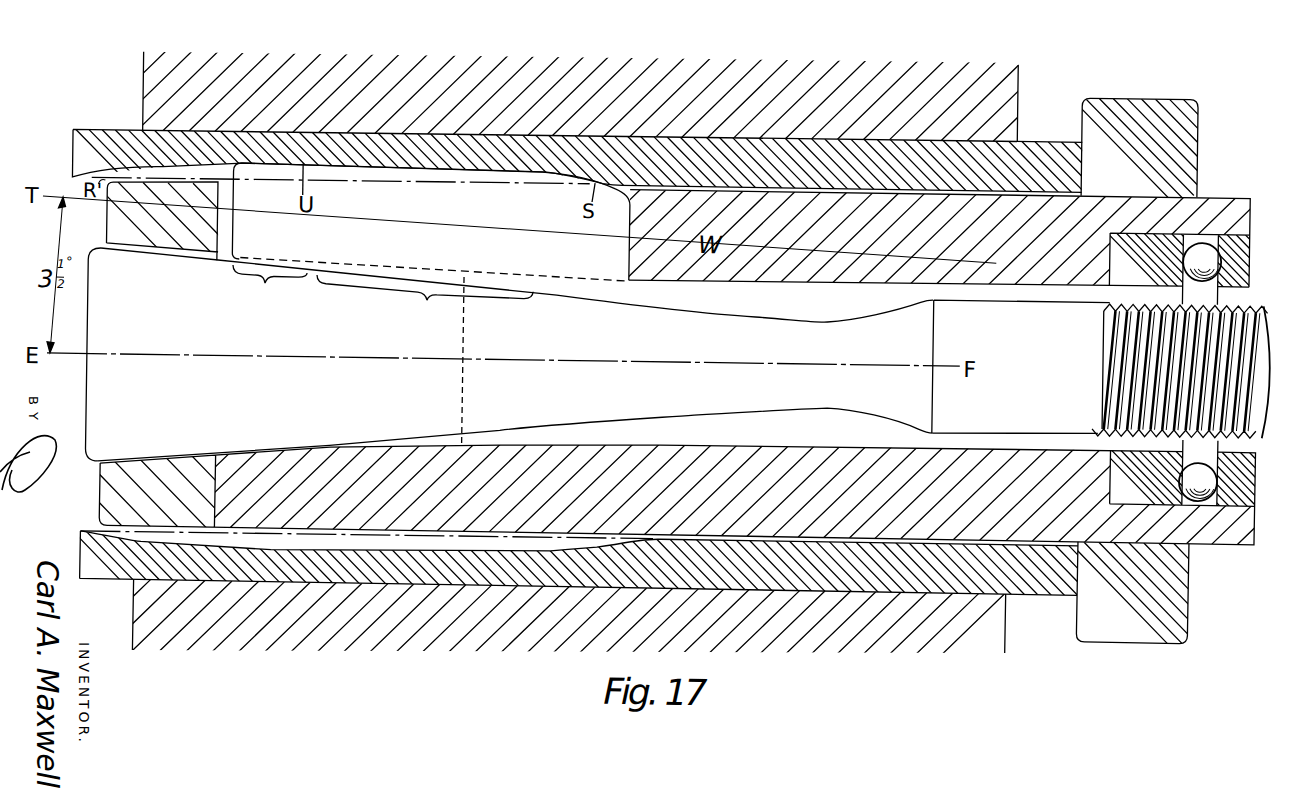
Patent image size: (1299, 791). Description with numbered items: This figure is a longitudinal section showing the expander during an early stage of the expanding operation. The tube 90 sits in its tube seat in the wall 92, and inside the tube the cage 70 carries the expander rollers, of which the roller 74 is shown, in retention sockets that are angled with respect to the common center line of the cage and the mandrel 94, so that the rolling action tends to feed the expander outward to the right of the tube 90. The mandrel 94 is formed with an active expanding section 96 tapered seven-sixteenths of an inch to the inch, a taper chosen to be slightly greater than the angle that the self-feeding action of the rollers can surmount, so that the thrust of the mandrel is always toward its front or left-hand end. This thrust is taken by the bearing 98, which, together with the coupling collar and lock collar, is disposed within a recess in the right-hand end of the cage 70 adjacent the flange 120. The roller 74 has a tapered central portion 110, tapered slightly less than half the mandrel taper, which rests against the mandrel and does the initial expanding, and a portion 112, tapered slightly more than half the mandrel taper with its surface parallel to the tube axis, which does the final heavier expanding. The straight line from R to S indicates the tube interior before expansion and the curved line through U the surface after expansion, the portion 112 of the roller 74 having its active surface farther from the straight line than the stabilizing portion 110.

The cage 70 is at (700, 443).
The expander roller 74 is at (434, 248).
The tube 90 is at (104, 128).
The wall 92 is at (1018, 67).
The mandrel 94 is at (91, 382).
The active expanding section 96 is at (334, 438).
The bearing 98 is at (1251, 242).
The central portion 110 is at (424, 309).
The portion 112 is at (269, 292).
The flange 120 is at (1146, 624).